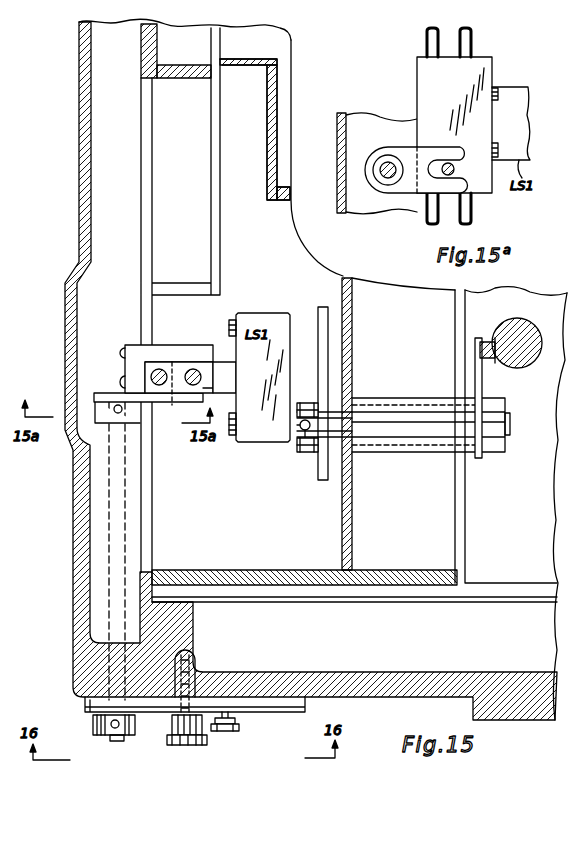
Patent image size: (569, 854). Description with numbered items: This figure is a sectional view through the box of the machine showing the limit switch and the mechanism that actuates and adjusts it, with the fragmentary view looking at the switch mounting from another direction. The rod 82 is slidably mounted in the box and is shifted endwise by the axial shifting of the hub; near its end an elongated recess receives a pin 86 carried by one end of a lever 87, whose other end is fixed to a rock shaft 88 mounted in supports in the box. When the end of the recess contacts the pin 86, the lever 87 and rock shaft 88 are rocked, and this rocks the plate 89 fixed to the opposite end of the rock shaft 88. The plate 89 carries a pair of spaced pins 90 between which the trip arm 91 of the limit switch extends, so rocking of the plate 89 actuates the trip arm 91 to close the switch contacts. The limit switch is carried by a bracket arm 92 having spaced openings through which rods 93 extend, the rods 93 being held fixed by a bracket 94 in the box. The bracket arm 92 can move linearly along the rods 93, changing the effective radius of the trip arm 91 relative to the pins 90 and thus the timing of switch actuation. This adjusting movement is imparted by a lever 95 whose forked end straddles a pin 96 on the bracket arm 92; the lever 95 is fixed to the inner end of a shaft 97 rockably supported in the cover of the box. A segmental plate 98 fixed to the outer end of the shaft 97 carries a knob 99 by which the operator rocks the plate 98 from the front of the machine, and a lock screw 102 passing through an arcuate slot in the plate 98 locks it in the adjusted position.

In FIG. 15, the rod 82 is at (522, 322).
In FIG. 15, the pin 86 is at (496, 342).
In FIG. 15, the lever 87 is at (483, 395).
In FIG. 15, the rock shaft 88 is at (412, 400).
In FIG. 15, the plate 89 is at (324, 308).
In FIG. 15, the pins 90 is at (312, 403).
In FIG. 15, the trip arm 91 is at (301, 430).
In FIG. 15, the bracket arm 92 is at (215, 362).
In FIG. 15A, the bracket arm 92 is at (426, 70).
In FIG. 15, the rods 93 is at (192, 369).
In FIG. 15A, the rods 93 is at (469, 43).
In FIG. 15, the bracket 94 is at (133, 350).
In FIG. 15, the lever 95 is at (180, 398).
In FIG. 15A, the lever 95 is at (418, 150).
In FIG. 15, the pin 96 is at (180, 400).
In FIG. 15A, the pin 96 is at (454, 168).
In FIG. 15, the shaft 97 is at (130, 486).
In FIG. 15, the segmental plate 98 is at (268, 712).
In FIG. 15, the knob 99 is at (228, 731).
In FIG. 15, the lock screw 102 is at (185, 745).